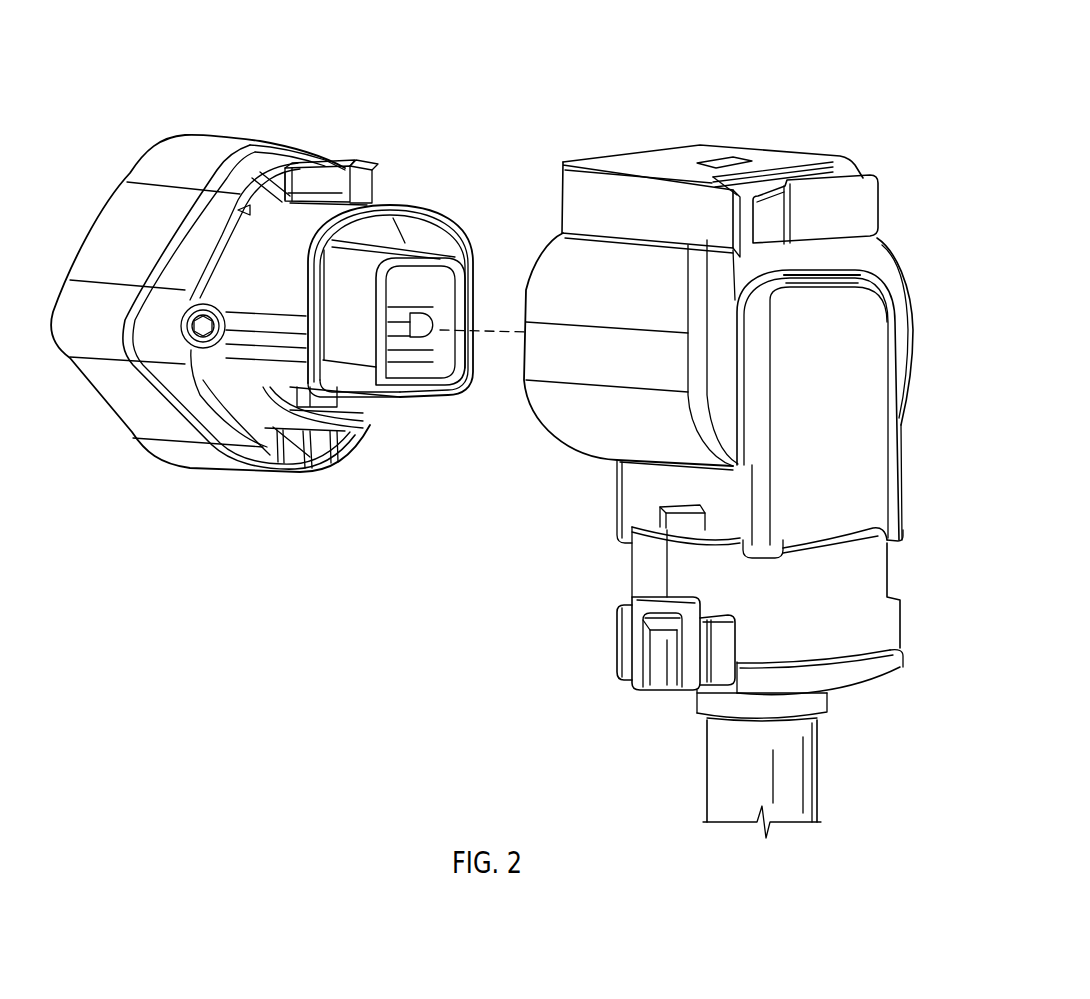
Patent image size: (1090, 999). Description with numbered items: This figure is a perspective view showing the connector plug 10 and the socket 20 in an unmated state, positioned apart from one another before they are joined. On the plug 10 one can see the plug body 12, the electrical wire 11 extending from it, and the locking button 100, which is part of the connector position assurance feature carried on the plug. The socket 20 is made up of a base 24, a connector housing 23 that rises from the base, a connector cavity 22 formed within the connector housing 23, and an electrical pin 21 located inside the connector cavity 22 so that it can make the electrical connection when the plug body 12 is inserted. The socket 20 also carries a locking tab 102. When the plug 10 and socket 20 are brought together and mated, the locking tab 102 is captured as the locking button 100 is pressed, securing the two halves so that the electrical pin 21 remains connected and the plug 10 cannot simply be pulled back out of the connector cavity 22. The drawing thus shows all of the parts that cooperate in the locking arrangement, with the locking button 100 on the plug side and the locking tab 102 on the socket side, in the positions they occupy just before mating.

The connector plug 10 is at (763, 102).
The electrical wire 11 is at (807, 783).
The plug body 12 is at (897, 287).
The locking button 100 is at (853, 212).
The socket 20 is at (167, 500).
The electrical pin 21 is at (418, 330).
The connector cavity 22 is at (393, 363).
The connector housing 23 is at (353, 373).
The base 24 is at (93, 307).
The locking tab 102 is at (351, 197).